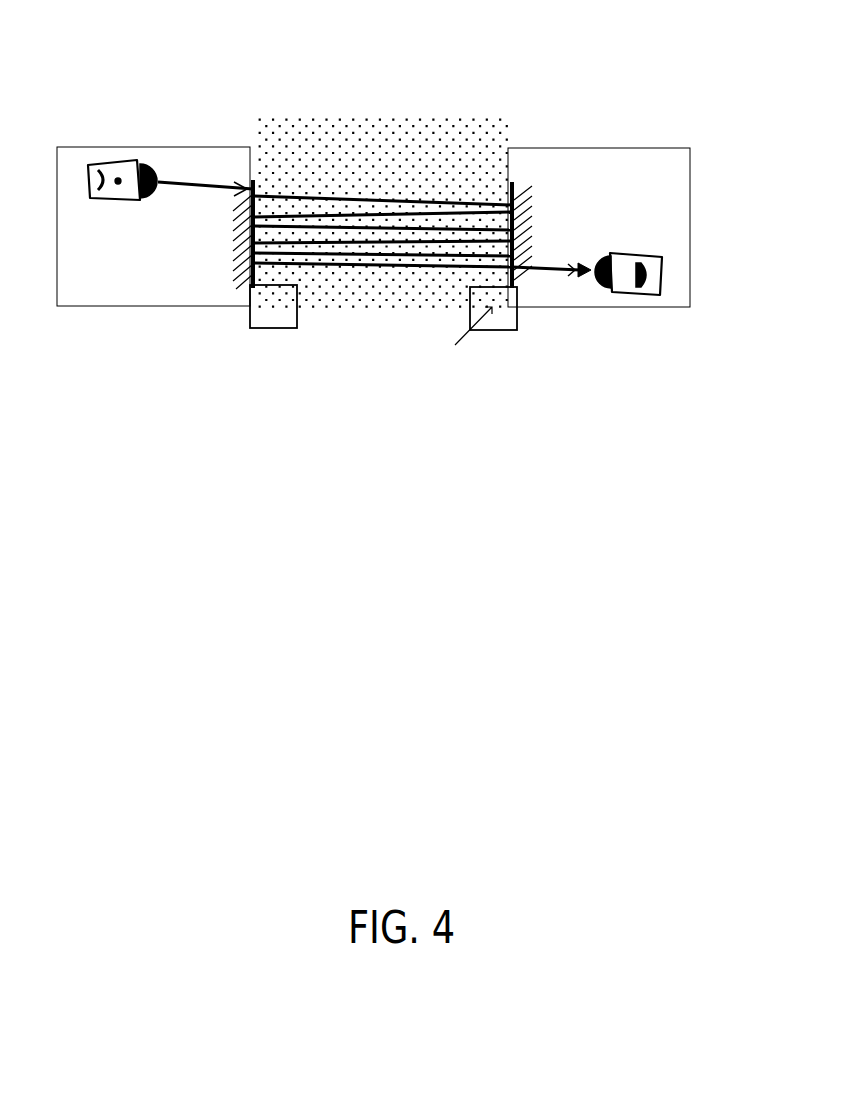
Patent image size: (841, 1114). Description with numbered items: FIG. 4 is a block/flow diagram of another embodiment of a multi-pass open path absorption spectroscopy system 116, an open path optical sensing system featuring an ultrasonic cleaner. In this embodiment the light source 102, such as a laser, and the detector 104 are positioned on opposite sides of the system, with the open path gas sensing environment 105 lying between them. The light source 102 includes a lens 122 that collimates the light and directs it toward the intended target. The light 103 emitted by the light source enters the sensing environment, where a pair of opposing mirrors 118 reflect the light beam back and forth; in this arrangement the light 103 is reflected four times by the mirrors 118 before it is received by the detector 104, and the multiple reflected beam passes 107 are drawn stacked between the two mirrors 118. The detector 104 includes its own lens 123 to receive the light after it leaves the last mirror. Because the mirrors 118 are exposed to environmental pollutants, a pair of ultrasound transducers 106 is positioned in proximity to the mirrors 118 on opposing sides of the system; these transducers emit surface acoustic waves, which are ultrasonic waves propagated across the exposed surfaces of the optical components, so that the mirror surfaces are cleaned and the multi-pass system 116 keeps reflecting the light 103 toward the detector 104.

The light source 102 is at (107, 157).
The lens 122 is at (153, 167).
The light 103 is at (193, 183).
The open path gas sensing environment 105 is at (383, 191).
The mirrors 118 is at (513, 185).
The multi-pass reflected beams 107 is at (282, 272).
The ultrasound transducers 106 is at (286, 322).
The multi-pass open path absorption spectroscopy system 116 is at (129, 306).
The lens 123 is at (598, 291).
The detector 104 is at (632, 296).